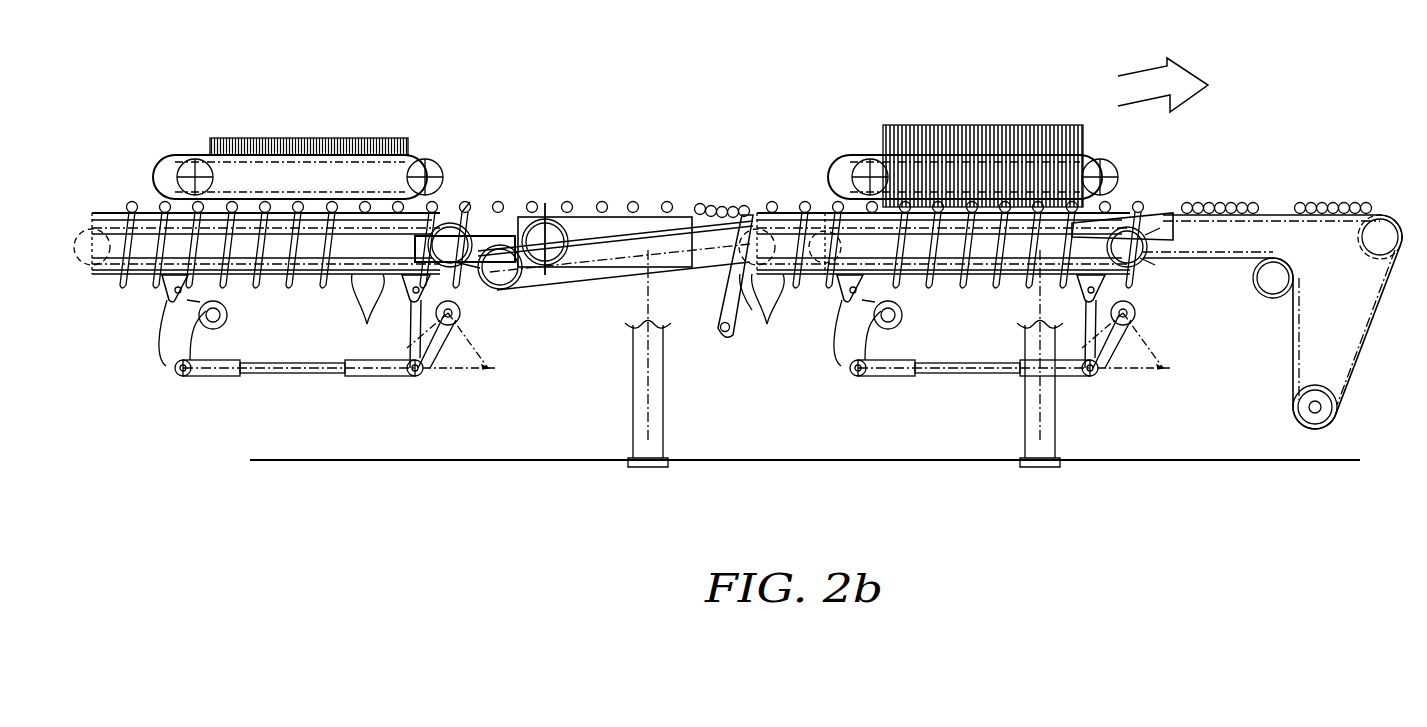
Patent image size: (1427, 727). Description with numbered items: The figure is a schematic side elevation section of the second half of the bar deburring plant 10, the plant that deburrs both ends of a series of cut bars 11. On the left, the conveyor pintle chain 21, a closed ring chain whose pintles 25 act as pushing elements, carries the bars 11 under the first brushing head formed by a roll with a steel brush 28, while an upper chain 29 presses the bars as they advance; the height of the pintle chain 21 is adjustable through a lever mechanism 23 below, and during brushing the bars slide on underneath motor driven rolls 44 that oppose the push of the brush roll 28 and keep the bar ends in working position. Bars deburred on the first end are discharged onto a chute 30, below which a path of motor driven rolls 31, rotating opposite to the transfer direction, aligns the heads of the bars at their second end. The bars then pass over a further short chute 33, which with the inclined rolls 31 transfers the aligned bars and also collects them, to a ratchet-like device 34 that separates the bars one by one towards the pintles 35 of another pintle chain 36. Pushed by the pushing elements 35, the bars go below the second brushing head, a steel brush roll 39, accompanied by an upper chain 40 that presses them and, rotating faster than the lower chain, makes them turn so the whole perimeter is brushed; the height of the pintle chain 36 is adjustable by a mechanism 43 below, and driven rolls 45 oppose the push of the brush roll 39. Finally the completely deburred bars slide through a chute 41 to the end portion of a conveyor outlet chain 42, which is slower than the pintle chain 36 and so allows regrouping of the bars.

The bar deburring plant 10 is at (682, 108).
The cut bars 11 is at (334, 203).
The conveyor pintle chain 21 is at (302, 262).
The lever mechanism 23 is at (295, 366).
The pintles 25 is at (368, 313).
The steel brush roll 28 is at (238, 138).
The upper chain 29 is at (186, 156).
The chute 30 is at (483, 220).
The motor driven rolls 31 is at (653, 223).
The short chute 33 is at (708, 208).
The separating device 34 is at (732, 338).
The pintles 35 is at (762, 313).
The pintle chain 36 is at (933, 262).
The steel brush roll 39 is at (985, 133).
The upper chain 40 is at (867, 157).
The chute 41 is at (1162, 223).
The conveyor outlet chain 42 is at (1282, 216).
The adjusting mechanism 43 is at (977, 368).
The motor driven rolls 44 is at (265, 250).
The driven rolls 45 is at (977, 250).